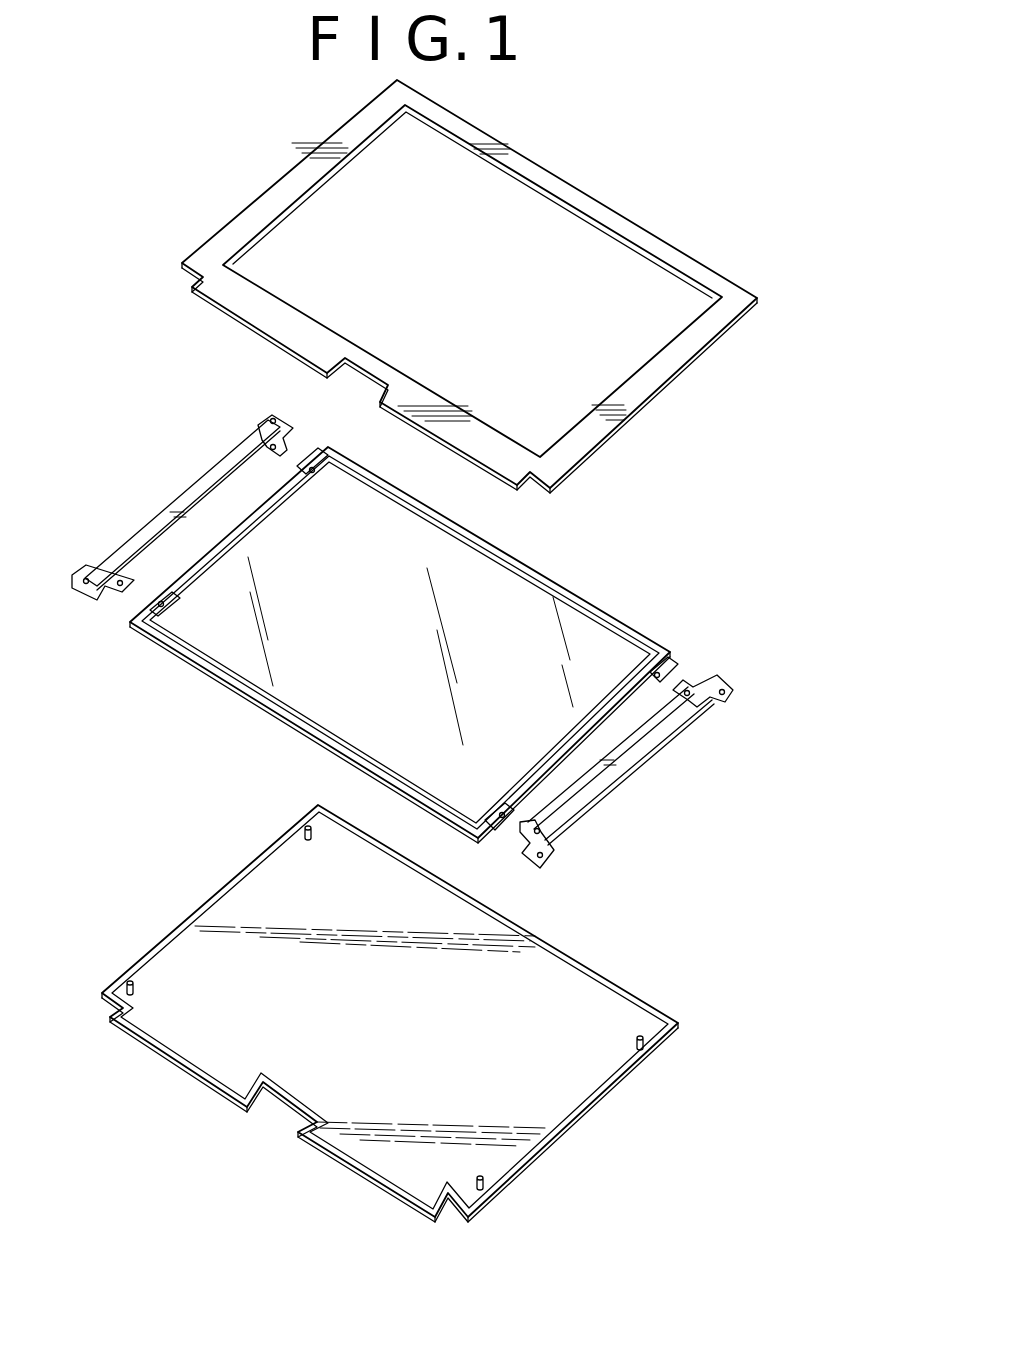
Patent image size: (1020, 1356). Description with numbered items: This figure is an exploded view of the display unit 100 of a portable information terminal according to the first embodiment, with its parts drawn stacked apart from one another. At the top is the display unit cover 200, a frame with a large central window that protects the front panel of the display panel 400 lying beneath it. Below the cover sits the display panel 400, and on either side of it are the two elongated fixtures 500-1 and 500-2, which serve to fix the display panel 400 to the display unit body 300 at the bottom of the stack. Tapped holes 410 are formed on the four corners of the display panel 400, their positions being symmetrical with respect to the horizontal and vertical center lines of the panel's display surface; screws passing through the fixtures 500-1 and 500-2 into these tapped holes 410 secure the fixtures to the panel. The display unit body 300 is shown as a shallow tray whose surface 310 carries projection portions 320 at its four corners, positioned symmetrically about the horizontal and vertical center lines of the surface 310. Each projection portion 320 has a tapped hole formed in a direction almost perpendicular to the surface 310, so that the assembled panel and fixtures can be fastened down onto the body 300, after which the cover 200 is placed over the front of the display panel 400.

The display unit 100 is at (657, 186).
The display unit cover 200 is at (272, 187).
The display unit body 300 is at (173, 1057).
The surface 310 is at (187, 960).
The projection portion 320 is at (312, 841).
The display panel 400 is at (198, 667).
The tapped hole 410 is at (500, 818).
The fixture 500-1 is at (194, 497).
The fixture 500-2 is at (641, 768).